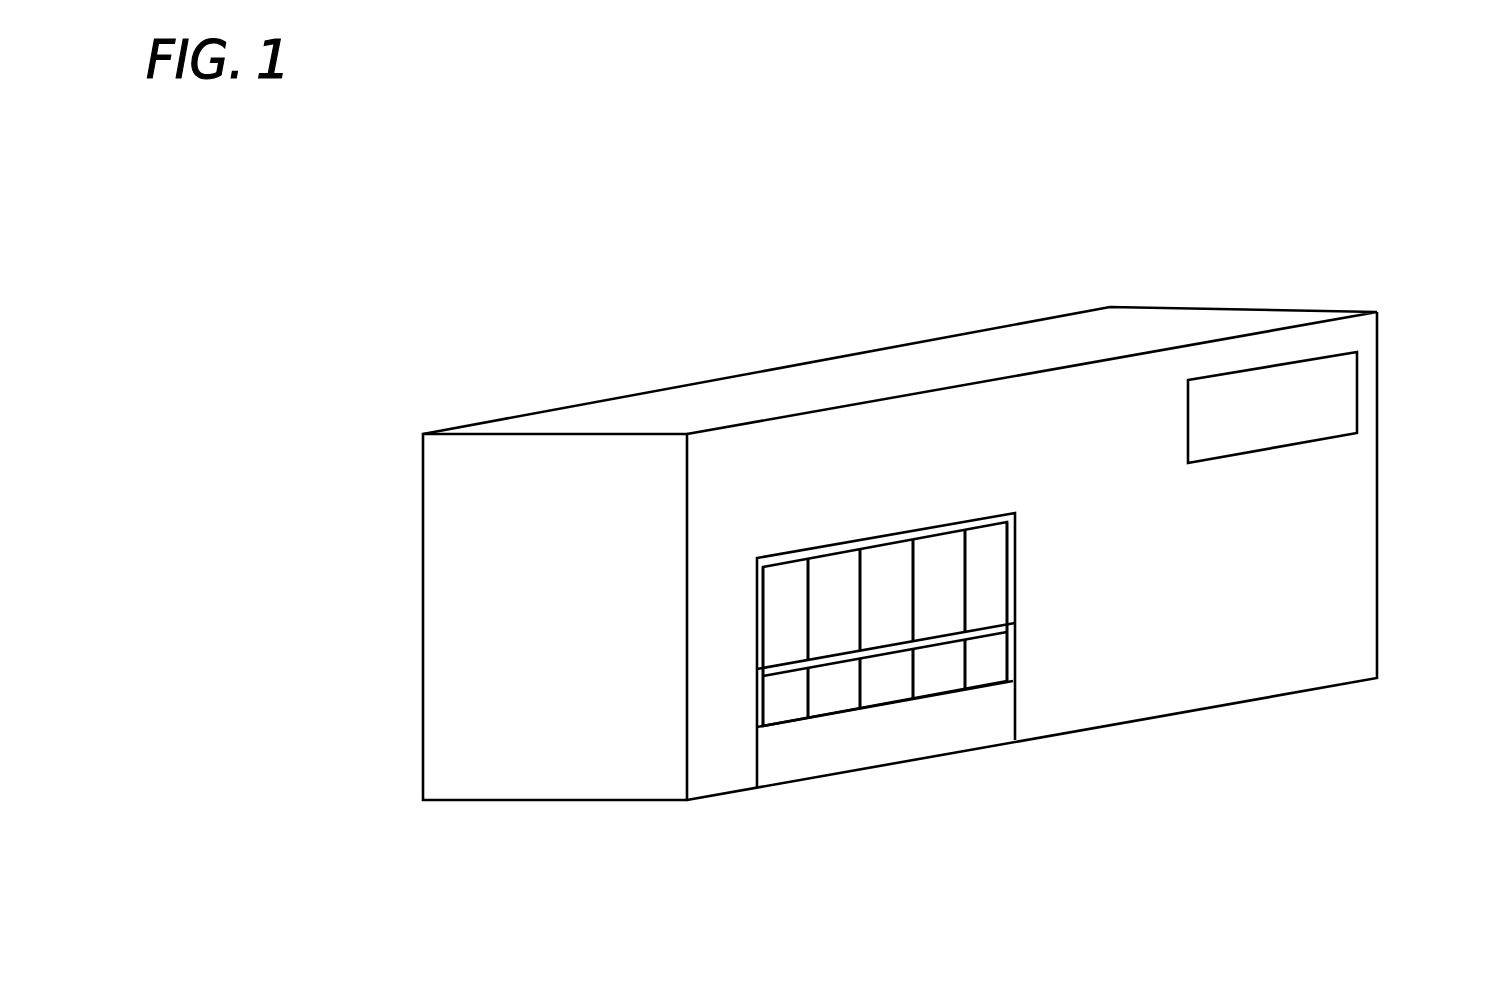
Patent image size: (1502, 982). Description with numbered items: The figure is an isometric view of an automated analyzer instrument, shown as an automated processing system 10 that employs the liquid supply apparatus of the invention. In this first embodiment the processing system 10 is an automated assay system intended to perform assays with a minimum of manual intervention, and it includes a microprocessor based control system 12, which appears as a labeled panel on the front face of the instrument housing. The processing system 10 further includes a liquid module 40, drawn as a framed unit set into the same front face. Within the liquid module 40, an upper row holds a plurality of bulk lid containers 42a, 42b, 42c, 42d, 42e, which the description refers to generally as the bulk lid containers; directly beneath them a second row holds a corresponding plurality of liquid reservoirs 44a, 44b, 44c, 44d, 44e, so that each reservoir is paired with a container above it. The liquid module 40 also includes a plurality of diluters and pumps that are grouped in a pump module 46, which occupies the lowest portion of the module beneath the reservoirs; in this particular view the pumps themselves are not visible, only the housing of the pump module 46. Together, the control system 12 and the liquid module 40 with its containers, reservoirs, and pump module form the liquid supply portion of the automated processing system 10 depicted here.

The automated processing system 10 is at (1378, 557).
The microprocessor based control system 12 is at (1327, 409).
The liquid module 40 is at (991, 513).
The bulk lid container 42a is at (790, 593).
The bulk lid container 42b is at (835, 587).
The bulk lid container 42c is at (887, 578).
The bulk lid container 42d is at (935, 575).
The bulk lid container 42e is at (982, 575).
The liquid reservoir 44a is at (782, 697).
The liquid reservoir 44b is at (832, 688).
The liquid reservoir 44c is at (882, 680).
The liquid reservoir 44d is at (933, 672).
The liquid reservoir 44e is at (993, 660).
The pump module 46 is at (777, 770).